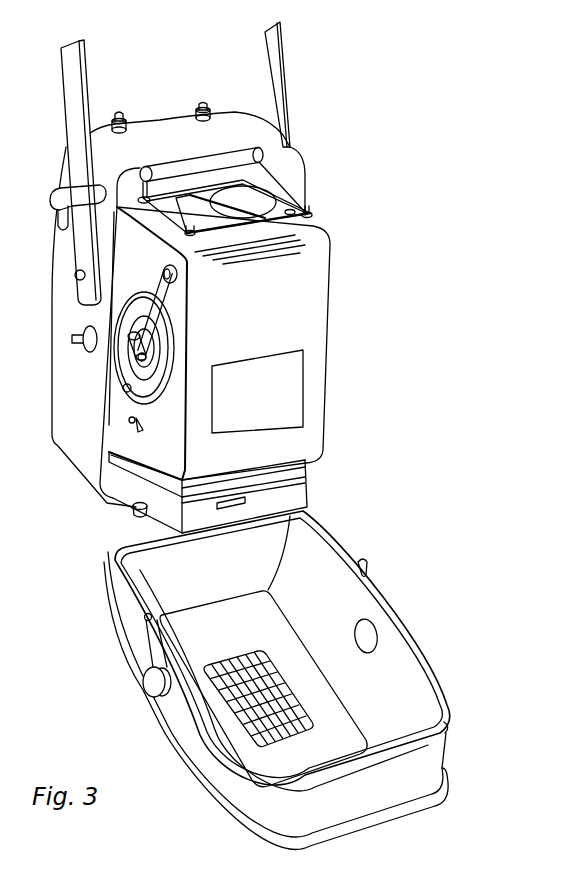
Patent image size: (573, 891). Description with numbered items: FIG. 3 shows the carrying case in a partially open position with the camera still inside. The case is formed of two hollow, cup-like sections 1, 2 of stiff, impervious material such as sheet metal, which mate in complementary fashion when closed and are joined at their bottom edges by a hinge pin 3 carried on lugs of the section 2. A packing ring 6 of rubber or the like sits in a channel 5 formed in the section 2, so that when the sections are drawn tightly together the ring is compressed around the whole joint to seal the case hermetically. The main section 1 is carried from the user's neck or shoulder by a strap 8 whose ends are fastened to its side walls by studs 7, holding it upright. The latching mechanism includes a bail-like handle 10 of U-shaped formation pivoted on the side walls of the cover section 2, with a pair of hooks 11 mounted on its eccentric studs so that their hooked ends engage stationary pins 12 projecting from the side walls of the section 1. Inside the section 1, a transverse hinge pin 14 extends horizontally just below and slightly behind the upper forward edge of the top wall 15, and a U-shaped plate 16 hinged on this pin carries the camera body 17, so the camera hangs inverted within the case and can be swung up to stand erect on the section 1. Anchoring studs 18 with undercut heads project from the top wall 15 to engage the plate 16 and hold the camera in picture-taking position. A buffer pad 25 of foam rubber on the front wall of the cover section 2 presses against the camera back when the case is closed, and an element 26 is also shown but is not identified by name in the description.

The housing 1 is at (65, 423).
The pan 2 is at (280, 680).
The foot 3 is at (131, 507).
The rim 5 is at (430, 682).
The bead 6 is at (448, 727).
The pin 7 is at (75, 276).
The arm 8 is at (68, 80).
The skid rail 10 is at (233, 813).
The handle 11 is at (145, 645).
The knob 12 is at (72, 339).
The handle bar 14 is at (282, 156).
The top cover 15 is at (141, 130).
The reel plate 16 is at (287, 198).
The front housing 17 is at (313, 296).
The knob 18 is at (208, 104).
The grid 25 is at (233, 713).
The post 26 is at (322, 232).